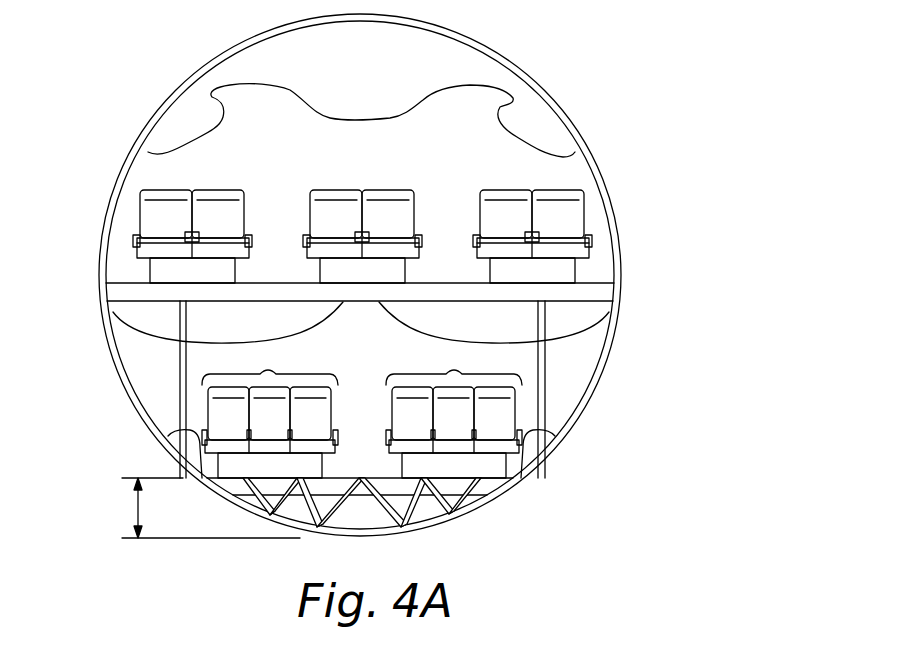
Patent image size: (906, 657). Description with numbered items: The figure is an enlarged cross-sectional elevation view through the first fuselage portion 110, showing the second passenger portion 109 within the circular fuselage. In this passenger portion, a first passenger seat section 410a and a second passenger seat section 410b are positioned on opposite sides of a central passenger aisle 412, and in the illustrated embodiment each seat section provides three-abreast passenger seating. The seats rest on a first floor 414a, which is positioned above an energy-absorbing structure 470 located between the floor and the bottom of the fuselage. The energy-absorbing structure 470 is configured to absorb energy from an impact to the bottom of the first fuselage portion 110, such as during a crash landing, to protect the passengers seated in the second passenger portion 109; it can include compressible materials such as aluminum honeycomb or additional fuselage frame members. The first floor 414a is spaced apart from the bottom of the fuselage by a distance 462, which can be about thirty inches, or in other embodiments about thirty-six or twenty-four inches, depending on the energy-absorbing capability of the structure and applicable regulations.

The first fuselage portion 110 is at (497, 53).
The central passenger aisle 412 is at (362, 390).
The second passenger portion 109 is at (312, 353).
The first passenger seat section 410a is at (270, 369).
The second passenger seat section 410b is at (455, 370).
The first floor 414a is at (505, 465).
The distance 462 is at (137, 508).
The energy-absorbing structure 470 is at (430, 510).